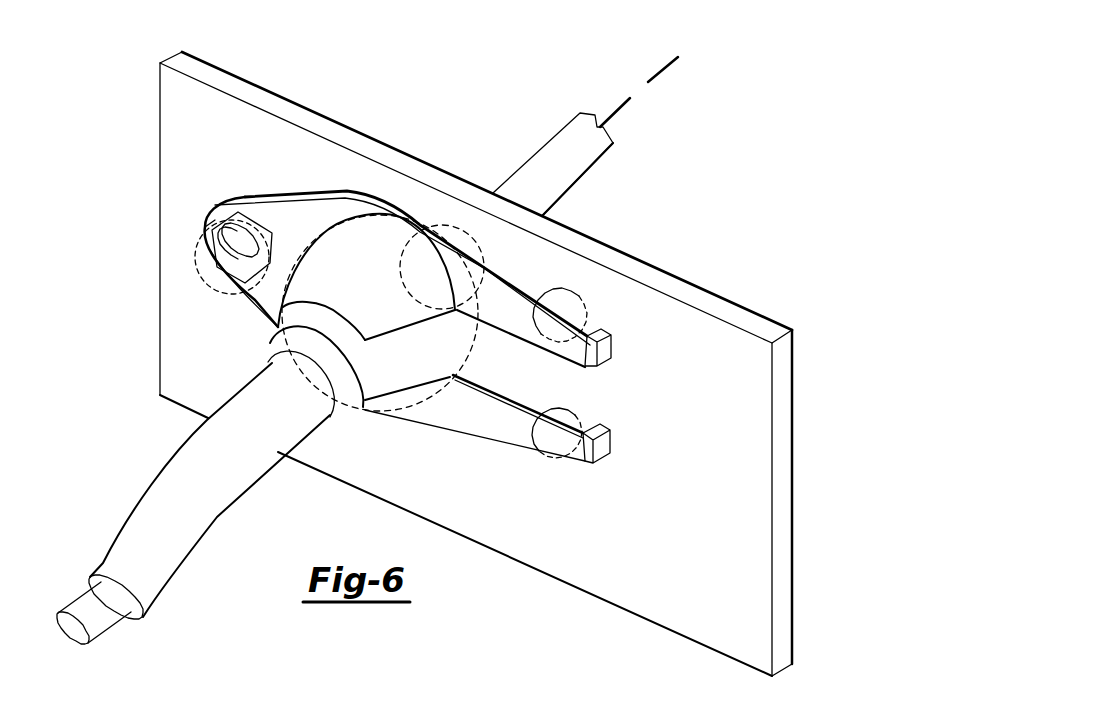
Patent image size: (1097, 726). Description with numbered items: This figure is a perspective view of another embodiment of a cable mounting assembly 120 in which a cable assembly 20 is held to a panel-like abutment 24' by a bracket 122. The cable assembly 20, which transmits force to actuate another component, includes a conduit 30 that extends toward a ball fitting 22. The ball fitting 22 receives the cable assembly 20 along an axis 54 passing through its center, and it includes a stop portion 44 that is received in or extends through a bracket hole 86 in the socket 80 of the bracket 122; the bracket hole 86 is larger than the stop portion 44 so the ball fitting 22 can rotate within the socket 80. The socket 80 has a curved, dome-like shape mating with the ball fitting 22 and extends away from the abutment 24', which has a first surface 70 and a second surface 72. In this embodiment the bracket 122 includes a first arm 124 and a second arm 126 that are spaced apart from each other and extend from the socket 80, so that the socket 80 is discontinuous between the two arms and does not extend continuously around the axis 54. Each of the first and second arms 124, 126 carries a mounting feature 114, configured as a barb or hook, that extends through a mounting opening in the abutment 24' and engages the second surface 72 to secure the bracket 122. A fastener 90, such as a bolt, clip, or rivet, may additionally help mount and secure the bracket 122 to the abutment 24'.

The cable assembly 20 is at (110, 522).
The ball fitting 22 is at (417, 355).
The abutment 24' is at (466, 535).
The conduit 30 is at (183, 453).
The stop portion 44 is at (280, 340).
The axis 54 is at (640, 87).
The first surface 70 is at (750, 397).
The second surface 72 is at (730, 300).
The socket 80 is at (357, 284).
The bracket hole 86 is at (583, 315).
The fastener 90 is at (257, 233).
The mounting feature 114 is at (600, 440).
The cable mounting assembly 120 is at (418, 128).
The bracket 122 is at (262, 317).
The first arm 124 is at (523, 337).
The second arm 126 is at (482, 400).